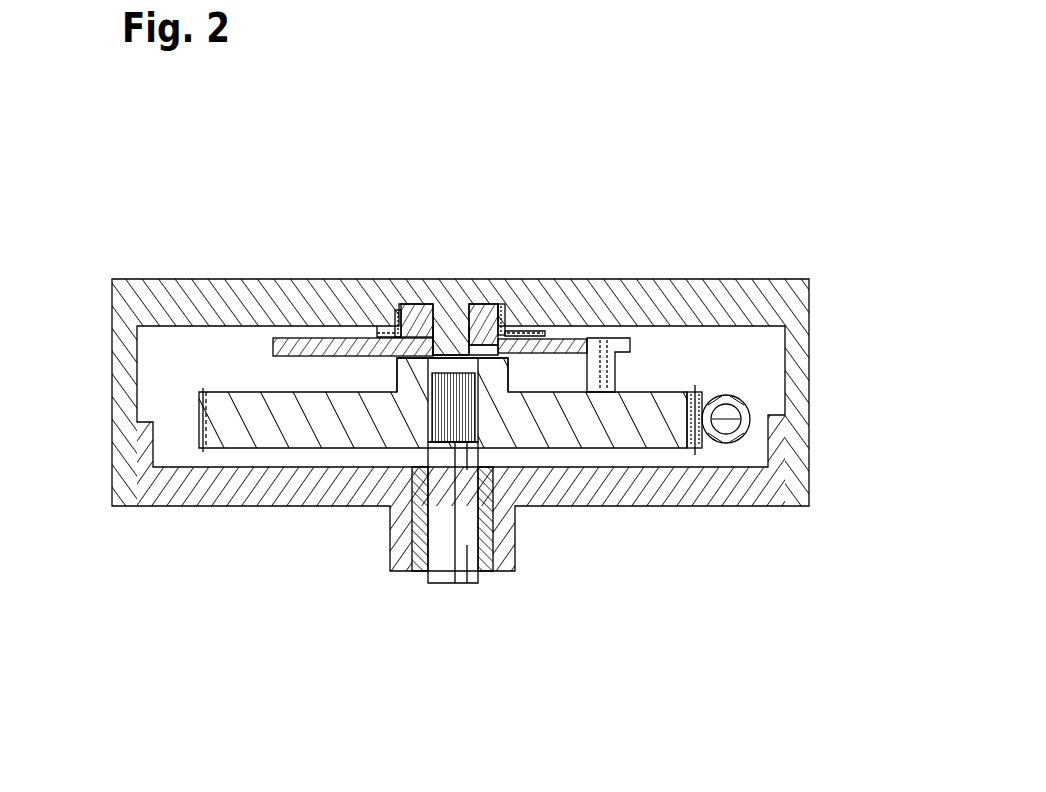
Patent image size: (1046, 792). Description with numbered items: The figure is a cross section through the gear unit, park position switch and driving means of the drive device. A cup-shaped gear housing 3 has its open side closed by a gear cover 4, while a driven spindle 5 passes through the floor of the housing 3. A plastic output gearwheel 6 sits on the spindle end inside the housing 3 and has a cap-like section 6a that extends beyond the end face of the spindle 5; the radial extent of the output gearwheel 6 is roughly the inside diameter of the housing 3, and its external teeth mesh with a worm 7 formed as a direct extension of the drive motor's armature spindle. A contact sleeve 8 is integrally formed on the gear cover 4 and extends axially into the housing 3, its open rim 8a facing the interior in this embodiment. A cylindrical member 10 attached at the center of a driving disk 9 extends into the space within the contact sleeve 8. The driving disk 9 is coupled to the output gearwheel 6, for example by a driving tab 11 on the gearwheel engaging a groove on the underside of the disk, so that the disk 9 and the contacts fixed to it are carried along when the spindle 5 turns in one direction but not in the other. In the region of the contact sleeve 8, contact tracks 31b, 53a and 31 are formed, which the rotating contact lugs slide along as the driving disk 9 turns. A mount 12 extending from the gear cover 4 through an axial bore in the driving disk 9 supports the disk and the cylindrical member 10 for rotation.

The gear housing 3 is at (822, 372).
The gear cover 4 is at (797, 292).
The driven spindle 5 is at (443, 572).
The output gearwheel 6 is at (265, 442).
The cap-like section 6a is at (556, 425).
The worm 7 is at (728, 420).
The contact sleeve 8 is at (375, 330).
The open rim 8a is at (545, 332).
The driving disk 9 is at (287, 346).
The cylindrical member 10 is at (420, 312).
The driving tab 11 is at (600, 373).
The mount 12 is at (452, 330).
The contact track 31 is at (392, 312).
The contact track 31b is at (470, 305).
The contact track 53a is at (508, 315).